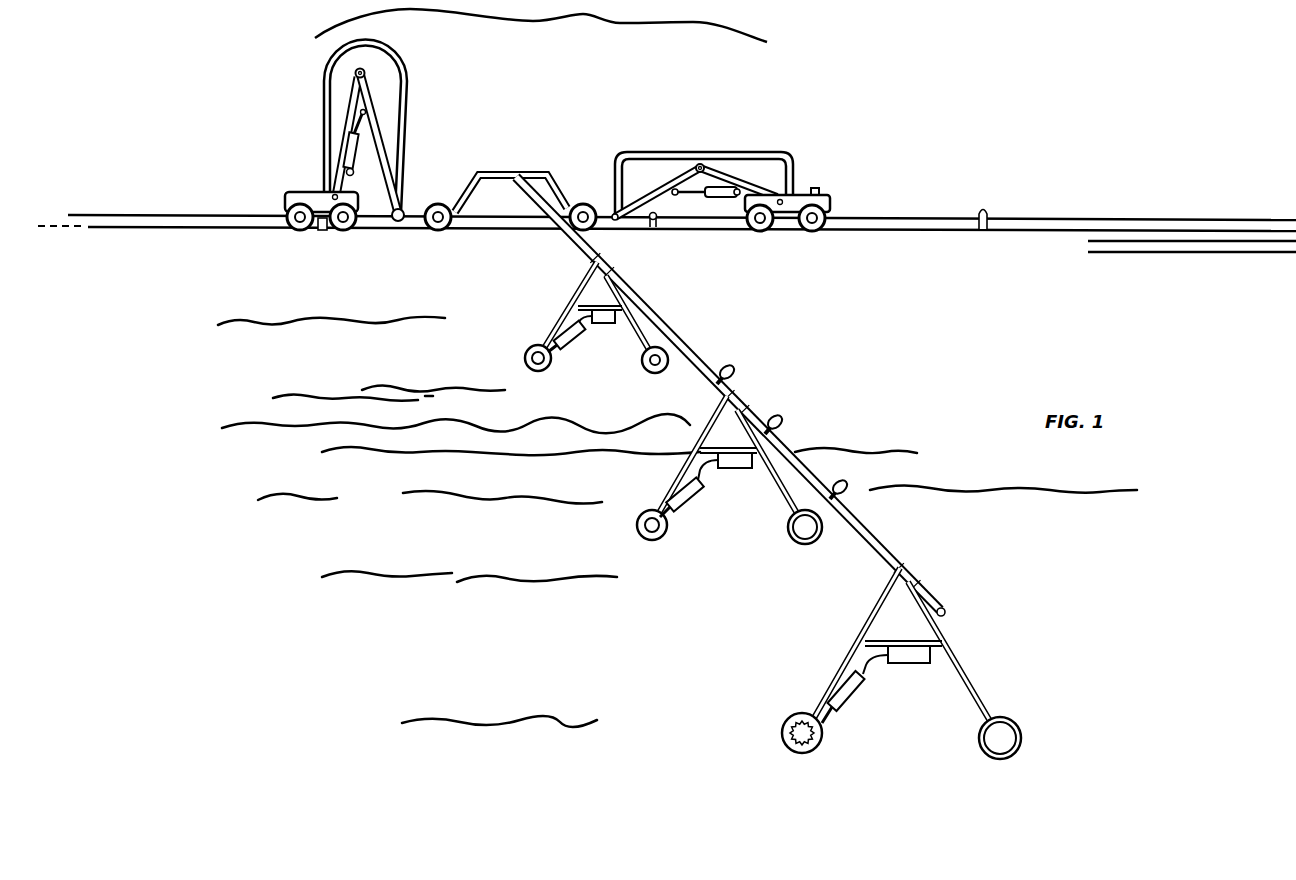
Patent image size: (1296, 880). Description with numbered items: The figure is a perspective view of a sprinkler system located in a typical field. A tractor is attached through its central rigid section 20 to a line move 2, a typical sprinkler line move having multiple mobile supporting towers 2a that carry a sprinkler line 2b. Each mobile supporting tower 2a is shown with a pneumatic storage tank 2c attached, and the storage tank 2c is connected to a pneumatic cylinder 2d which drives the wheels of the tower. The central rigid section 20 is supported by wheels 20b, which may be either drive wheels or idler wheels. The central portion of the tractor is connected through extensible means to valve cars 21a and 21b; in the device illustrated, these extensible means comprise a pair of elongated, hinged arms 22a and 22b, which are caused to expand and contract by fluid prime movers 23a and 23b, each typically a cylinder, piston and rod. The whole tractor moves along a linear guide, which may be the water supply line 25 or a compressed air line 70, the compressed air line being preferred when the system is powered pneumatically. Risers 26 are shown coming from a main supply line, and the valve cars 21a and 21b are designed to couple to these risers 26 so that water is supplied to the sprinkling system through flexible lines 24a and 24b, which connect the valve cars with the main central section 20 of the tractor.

The line move 2 is at (697, 352).
The mobile supporting tower 2a is at (683, 465).
The sprinkler line 2b is at (735, 371).
The pneumatic storage tank 2c is at (595, 318).
The pneumatic cylinder 2d is at (570, 336).
The central rigid section 20 is at (518, 172).
The wheels 20b is at (576, 225).
The valve car 21a is at (832, 208).
The valve car 21b is at (287, 201).
The hinged arm 22a is at (653, 190).
The hinged arm 22b is at (388, 158).
The fluid prime mover 23a is at (718, 199).
The fluid prime mover 23b is at (348, 162).
The flexible line 24a is at (796, 165).
The flexible line 24b is at (405, 108).
The water supply line 25 is at (1203, 218).
The riser 26 is at (320, 231).
The compressed air line 70 is at (1220, 254).